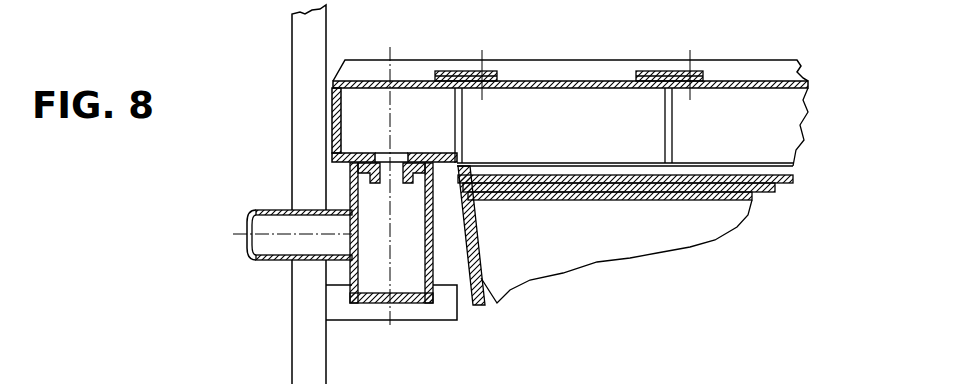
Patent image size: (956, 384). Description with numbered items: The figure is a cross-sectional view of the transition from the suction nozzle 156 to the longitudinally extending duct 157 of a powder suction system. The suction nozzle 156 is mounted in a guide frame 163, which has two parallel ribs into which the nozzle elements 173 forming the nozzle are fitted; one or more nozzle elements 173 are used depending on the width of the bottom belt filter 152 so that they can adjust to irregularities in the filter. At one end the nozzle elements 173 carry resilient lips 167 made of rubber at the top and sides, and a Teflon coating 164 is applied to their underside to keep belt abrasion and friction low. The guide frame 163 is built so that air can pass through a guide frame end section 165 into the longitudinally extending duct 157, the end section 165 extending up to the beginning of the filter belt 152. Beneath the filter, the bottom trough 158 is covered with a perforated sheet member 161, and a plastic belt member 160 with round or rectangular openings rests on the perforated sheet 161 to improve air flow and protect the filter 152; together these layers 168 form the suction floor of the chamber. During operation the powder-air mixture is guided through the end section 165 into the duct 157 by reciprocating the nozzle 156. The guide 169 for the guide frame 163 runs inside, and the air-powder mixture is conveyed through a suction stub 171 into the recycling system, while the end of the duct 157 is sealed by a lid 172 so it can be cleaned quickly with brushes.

The bottom belt filter 152 is at (633, 199).
The suction nozzle 156 is at (768, 142).
The longitudinally extending duct 157 is at (373, 208).
The bottom trough 158 is at (490, 297).
The plastic belt member 160 is at (603, 199).
The perforated sheet member 161 is at (587, 199).
The guide frame 163 is at (768, 66).
The Teflon coating 164 is at (395, 172).
The guide frame end section 165 is at (425, 81).
The resilient lips 167 is at (492, 70).
The strip layers stack 168 is at (652, 172).
The guide 169 is at (363, 153).
The suction stub 171 is at (282, 239).
The lid 172 is at (336, 92).
The nozzle elements 173 is at (583, 89).